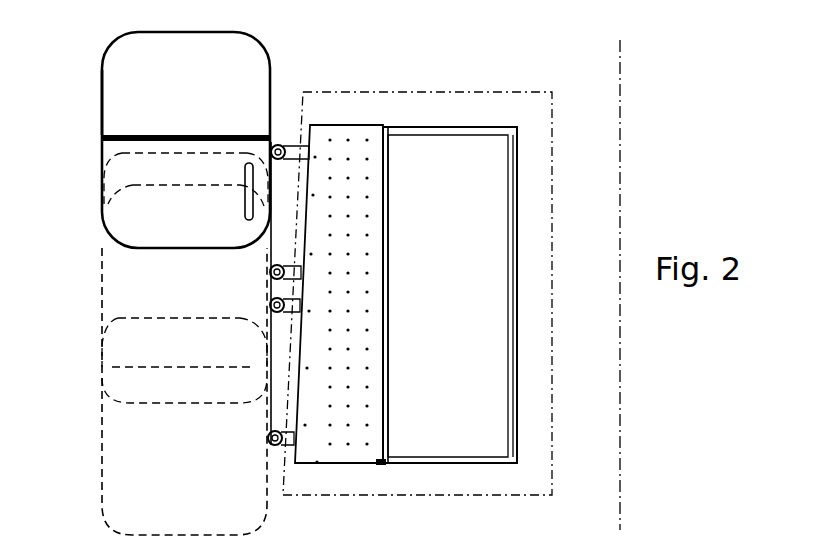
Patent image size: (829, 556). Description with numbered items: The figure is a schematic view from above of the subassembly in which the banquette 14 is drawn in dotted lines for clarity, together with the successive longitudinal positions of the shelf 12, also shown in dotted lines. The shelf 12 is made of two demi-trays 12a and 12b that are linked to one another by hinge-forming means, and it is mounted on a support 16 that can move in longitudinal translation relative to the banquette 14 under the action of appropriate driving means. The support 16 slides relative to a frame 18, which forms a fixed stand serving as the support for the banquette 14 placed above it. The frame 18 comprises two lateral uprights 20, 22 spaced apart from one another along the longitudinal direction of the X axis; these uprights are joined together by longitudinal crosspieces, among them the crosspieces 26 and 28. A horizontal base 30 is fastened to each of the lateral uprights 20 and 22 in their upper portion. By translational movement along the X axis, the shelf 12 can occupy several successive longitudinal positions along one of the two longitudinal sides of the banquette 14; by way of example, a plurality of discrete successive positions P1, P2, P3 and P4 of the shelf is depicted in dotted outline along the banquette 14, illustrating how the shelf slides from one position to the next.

The shelf 12 is at (147, 271).
The demi-tray 12a is at (214, 43).
The demi-tray 12b is at (110, 186).
The banquette 14 is at (552, 118).
The support 16 is at (303, 124).
The frame 18 is at (467, 120).
The lateral upright 20 is at (382, 468).
The lateral upright 22 is at (412, 125).
The longitudinal crosspiece 26 is at (387, 320).
The longitudinal crosspiece 28 is at (512, 298).
The horizontal base 30 is at (340, 464).
The first discrete position P1 is at (100, 95).
The second discrete position P2 is at (106, 165).
The third discrete position P3 is at (133, 187).
The fourth discrete position P4 is at (112, 332).
The X axis X is at (621, 98).